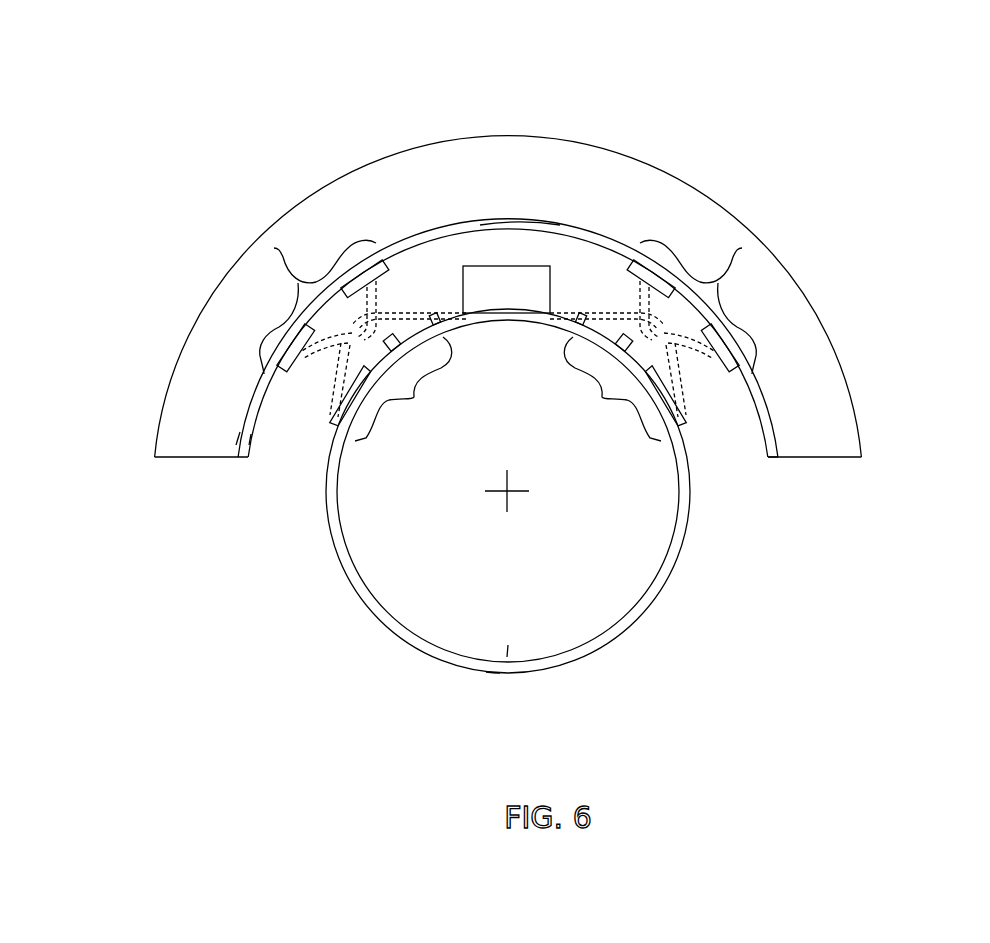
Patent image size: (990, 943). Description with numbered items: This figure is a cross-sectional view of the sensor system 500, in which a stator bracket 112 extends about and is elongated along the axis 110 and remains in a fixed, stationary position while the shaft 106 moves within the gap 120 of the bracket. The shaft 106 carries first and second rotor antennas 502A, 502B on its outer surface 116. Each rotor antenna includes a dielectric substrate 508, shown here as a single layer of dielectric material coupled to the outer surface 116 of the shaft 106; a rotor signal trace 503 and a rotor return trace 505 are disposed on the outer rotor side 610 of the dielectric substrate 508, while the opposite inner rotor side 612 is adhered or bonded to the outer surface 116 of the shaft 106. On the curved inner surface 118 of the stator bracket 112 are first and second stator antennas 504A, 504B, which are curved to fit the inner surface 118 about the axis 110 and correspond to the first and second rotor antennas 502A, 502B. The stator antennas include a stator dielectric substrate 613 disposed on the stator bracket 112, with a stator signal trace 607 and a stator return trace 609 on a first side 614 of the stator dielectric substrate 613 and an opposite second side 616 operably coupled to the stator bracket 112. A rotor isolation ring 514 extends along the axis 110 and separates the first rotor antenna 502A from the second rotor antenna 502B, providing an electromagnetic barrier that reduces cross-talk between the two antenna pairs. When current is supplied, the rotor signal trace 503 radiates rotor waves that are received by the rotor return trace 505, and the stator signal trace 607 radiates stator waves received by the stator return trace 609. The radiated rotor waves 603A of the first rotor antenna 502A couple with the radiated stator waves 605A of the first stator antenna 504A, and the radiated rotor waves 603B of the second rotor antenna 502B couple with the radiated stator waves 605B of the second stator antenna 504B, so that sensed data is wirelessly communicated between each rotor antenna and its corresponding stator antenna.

The sensor system 500 is at (854, 84).
The stator bracket 112 is at (833, 398).
The inner surface 118 is at (446, 232).
The gap 120 is at (743, 457).
The stator dielectric substrate 613 is at (548, 226).
The second side 616 is at (238, 432).
The first side 614 is at (251, 436).
The rotor isolation ring 514 is at (507, 283).
The stator signal trace 607 is at (362, 262).
The stator return trace 609 is at (644, 262).
The radiated stator waves of the first stator antenna 605A is at (712, 360).
The radiated stator waves of the second stator antenna 605B is at (312, 368).
The radiated rotor waves of the first rotor antenna 603A is at (684, 395).
The radiated rotor waves of the second rotor antenna 603B is at (342, 394).
The rotor signal trace 503 is at (423, 310).
The rotor return trace 505 is at (588, 310).
The first stator antenna 504A is at (742, 248).
The second stator antenna 504B is at (274, 248).
The first rotor antenna 502A is at (602, 397).
The second rotor antenna 502B is at (414, 397).
The shaft 106 is at (526, 502).
The dielectric substrate 508 is at (663, 576).
The outer surface 116 is at (634, 612).
The axis 110 is at (510, 493).
The outer rotor side 610 is at (490, 676).
The inner rotor side 612 is at (508, 645).